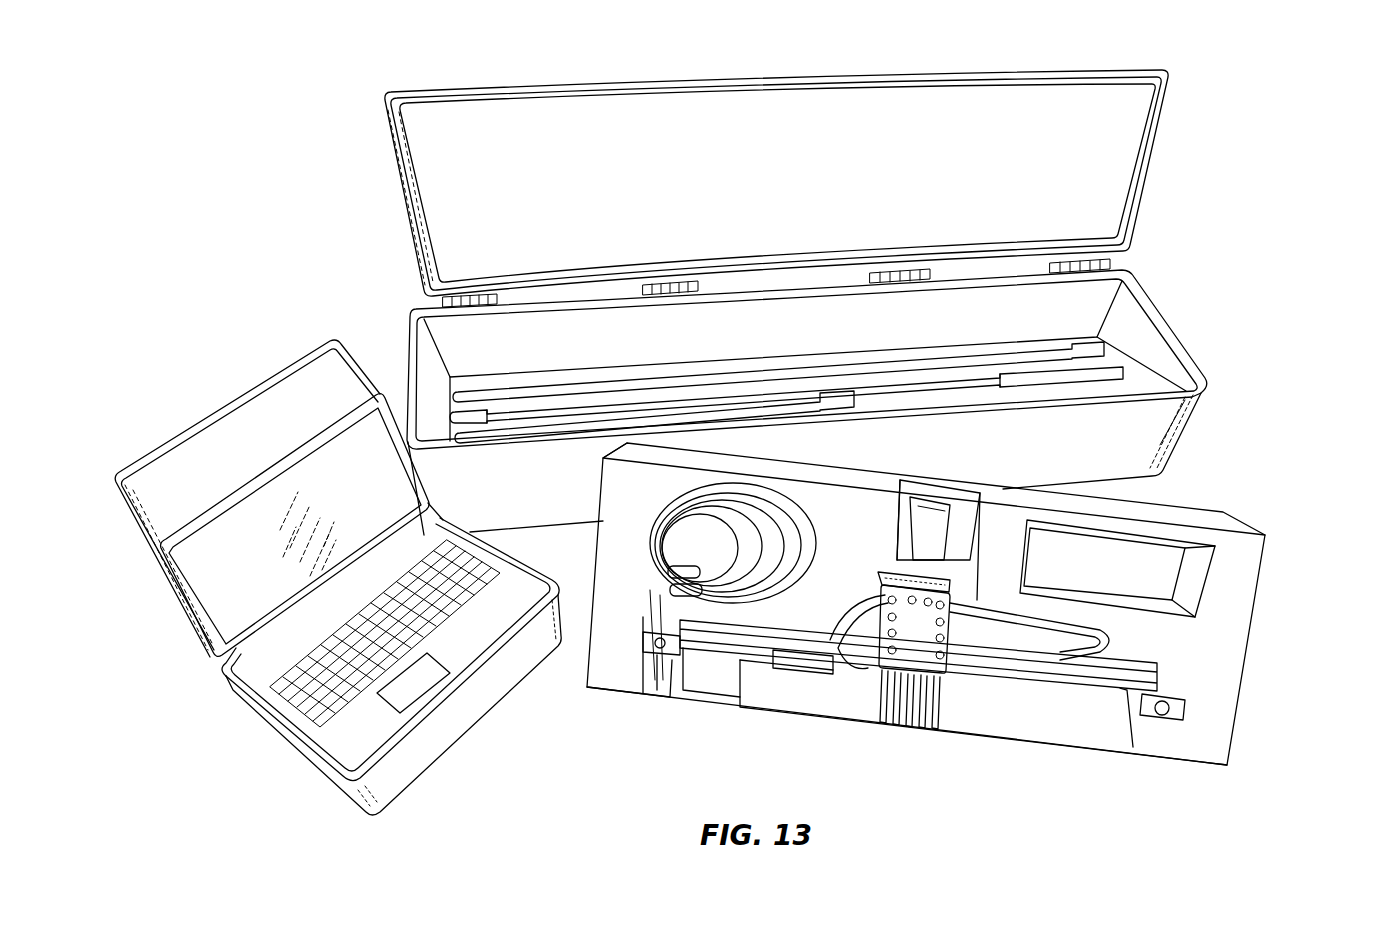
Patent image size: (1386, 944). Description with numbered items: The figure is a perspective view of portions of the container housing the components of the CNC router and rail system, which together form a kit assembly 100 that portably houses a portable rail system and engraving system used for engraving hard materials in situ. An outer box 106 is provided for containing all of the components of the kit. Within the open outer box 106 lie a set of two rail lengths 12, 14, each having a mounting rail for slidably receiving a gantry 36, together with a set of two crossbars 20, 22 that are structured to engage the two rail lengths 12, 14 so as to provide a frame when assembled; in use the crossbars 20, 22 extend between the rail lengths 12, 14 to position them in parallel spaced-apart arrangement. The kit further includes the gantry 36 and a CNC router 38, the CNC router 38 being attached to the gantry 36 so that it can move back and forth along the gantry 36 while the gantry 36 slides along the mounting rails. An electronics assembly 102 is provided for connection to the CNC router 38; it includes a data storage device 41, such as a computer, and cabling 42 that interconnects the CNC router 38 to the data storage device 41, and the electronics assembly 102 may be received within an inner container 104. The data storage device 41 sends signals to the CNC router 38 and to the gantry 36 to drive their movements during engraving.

The kit assembly 100 is at (1275, 370).
The electronics assembly 102 is at (307, 336).
The inner container 104 is at (273, 732).
The outer box 106 is at (1163, 438).
The rail length 12 is at (1040, 352).
The rail length 14 is at (972, 382).
The crossbar 20 is at (832, 415).
The crossbar 22 is at (850, 410).
The gantry 36 is at (1040, 672).
The CNC router 38 is at (913, 723).
The data storage device 41 is at (352, 738).
The cabling 42 is at (670, 585).